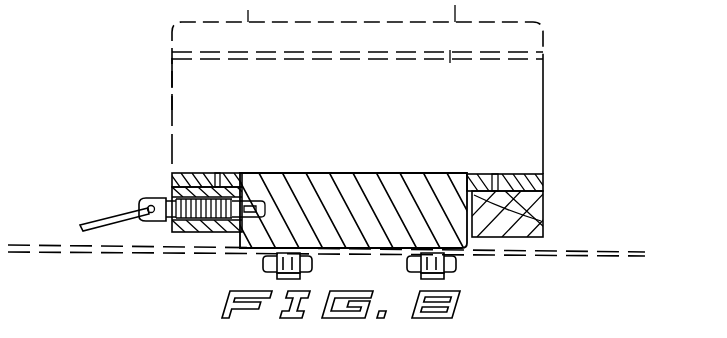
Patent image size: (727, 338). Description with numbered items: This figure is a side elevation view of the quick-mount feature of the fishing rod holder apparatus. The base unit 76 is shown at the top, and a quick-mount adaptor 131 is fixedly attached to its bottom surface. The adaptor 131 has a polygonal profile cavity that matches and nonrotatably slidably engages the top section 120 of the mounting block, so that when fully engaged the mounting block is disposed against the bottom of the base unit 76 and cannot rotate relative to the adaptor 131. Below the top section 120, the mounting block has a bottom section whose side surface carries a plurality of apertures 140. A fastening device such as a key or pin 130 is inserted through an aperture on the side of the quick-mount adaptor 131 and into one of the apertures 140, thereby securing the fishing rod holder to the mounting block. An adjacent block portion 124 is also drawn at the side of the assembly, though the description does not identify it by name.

The base unit 76 is at (548, 40).
The quick-mount adaptor 131 is at (543, 108).
The top section 120 is at (545, 183).
The end block 124 is at (541, 221).
The pin 130 is at (139, 199).
The apertures 140 is at (256, 203).